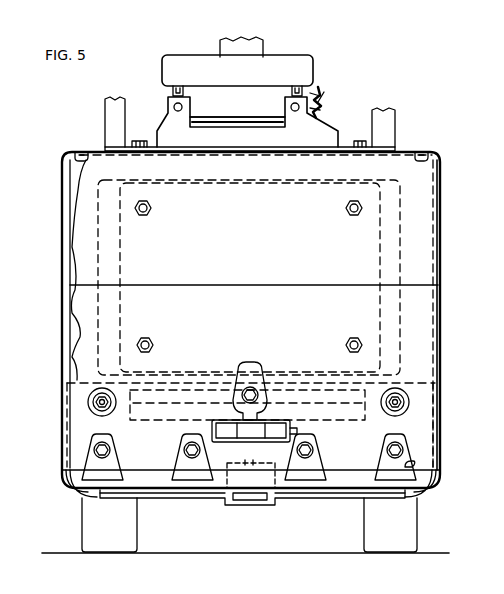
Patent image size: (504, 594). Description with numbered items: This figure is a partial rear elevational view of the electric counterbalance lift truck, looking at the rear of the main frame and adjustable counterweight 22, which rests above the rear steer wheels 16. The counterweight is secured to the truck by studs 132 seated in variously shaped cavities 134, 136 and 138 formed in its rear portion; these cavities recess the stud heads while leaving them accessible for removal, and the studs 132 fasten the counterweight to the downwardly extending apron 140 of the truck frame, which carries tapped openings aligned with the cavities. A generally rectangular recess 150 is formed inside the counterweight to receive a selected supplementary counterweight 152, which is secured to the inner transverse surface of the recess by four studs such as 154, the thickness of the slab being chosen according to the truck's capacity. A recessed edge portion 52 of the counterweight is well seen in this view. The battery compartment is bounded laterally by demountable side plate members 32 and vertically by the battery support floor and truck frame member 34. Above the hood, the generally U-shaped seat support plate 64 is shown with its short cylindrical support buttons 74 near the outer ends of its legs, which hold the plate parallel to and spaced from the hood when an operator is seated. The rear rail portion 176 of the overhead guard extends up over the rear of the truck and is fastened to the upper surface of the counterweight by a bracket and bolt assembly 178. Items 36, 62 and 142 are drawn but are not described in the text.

The rear steer wheels 16 is at (377, 527).
The main frame and adjustable counterweight 22 is at (249, 240).
The side plate members 32 is at (62, 233).
The battery support floor and truck frame member 34 is at (439, 342).
The housing flange 36 is at (62, 400).
The recessed edge portion 52 is at (436, 149).
The clamp block 62 is at (300, 64).
The seat support plate 64 is at (253, 133).
The cylindrical support buttons 74 is at (174, 104).
The studs 132 is at (117, 395).
The cavity 134 is at (413, 465).
The cavity 136 is at (383, 385).
The cavity 138 is at (255, 365).
The apron 140 is at (72, 500).
The lock cylinder 142 is at (297, 432).
The recess 150 is at (400, 228).
The supplementary counterweight 152 is at (364, 260).
The studs 154 is at (345, 220).
The rear rail portion 176 is at (389, 125).
The bracket and bolt assembly 178 is at (140, 148).